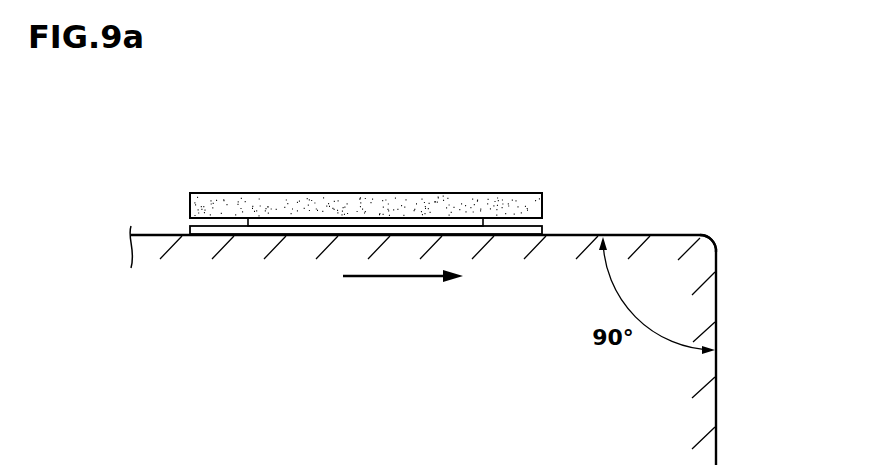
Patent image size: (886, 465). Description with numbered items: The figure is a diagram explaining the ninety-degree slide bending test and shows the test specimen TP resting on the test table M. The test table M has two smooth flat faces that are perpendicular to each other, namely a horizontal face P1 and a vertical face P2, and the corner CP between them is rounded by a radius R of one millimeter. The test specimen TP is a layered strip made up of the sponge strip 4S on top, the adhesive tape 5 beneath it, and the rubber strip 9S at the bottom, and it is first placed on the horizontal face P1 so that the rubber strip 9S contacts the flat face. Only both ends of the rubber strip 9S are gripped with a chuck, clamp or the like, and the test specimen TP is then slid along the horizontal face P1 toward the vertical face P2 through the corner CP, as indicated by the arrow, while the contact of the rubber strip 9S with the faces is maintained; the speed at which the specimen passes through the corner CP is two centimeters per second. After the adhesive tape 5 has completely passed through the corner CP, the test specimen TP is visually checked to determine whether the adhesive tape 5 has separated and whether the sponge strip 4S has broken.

The test specimen TP is at (280, 113).
The sponge strip 4S is at (303, 205).
The adhesive tape 5 is at (380, 226).
The rubber strip 9S is at (508, 231).
The horizontal face P1 is at (625, 235).
The vertical face P2 is at (716, 403).
The corner CP is at (703, 237).
The radius R is at (710, 243).
The test table M is at (381, 377).